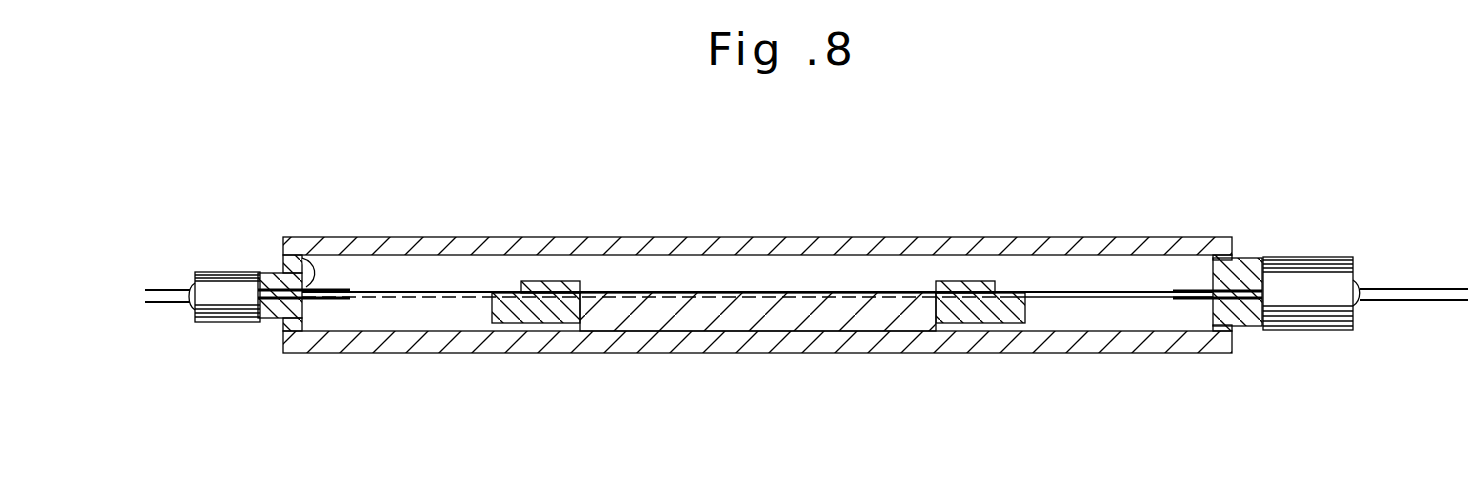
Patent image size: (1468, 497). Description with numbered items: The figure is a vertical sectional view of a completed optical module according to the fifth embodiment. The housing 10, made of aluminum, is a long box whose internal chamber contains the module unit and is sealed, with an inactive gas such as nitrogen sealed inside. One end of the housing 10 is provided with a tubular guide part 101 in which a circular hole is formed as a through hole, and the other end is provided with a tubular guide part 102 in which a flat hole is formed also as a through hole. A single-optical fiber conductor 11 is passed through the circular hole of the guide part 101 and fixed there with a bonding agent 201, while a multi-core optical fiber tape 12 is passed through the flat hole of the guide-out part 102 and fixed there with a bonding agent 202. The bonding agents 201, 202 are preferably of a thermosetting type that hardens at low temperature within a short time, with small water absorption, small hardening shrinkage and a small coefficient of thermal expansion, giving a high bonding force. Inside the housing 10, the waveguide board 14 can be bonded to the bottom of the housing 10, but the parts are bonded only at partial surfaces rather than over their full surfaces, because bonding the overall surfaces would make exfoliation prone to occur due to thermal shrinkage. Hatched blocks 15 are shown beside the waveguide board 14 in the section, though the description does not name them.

The housing 10 is at (399, 355).
The single-optical fiber conductor 11 is at (160, 289).
The multi-core optical fiber tape 12 is at (1428, 288).
The waveguide board 14 is at (775, 332).
The fixing block 15 is at (479, 314).
The tubular guide part 101 is at (208, 324).
The tubular guide part 102 is at (1313, 332).
The bonding agent 201 is at (307, 286).
The bonding agent 202 is at (1216, 302).